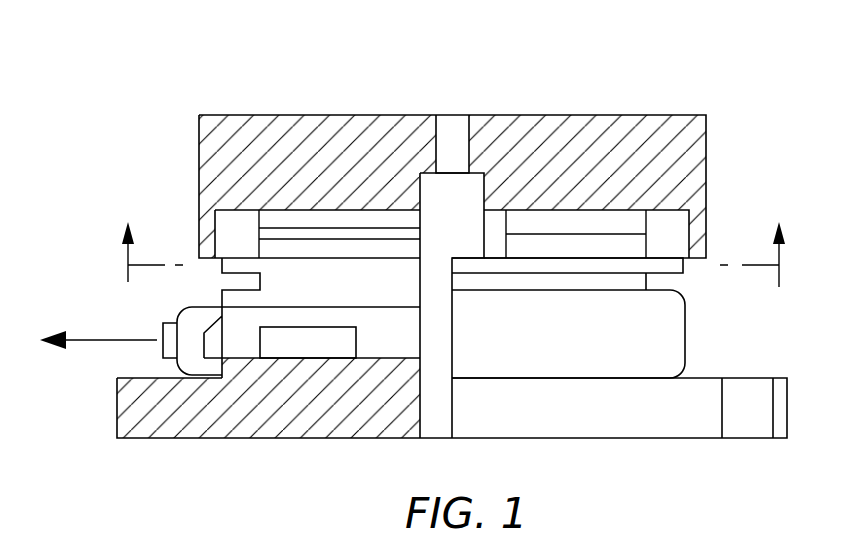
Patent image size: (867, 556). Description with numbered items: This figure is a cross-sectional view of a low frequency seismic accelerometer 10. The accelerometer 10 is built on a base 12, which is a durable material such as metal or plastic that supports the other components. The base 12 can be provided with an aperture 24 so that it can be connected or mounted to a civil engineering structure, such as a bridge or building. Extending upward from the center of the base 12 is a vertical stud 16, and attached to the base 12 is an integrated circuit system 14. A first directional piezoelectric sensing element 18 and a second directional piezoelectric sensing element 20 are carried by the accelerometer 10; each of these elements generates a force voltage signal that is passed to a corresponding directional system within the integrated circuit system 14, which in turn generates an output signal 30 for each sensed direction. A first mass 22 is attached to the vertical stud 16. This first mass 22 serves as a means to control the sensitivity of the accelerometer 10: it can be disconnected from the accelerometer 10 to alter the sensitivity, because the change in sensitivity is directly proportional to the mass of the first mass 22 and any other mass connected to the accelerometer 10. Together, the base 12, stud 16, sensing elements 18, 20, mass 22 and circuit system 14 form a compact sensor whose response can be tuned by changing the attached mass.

The seismic accelerometer 10 is at (426, 251).
The base 12 is at (549, 438).
The integrated circuit system 14 is at (298, 345).
The vertical stud 16 is at (459, 185).
The first directional piezoelectric sensing element 18 is at (303, 220).
The second directional piezoelectric sensing element 20 is at (602, 225).
The first mass 22 is at (586, 113).
The aperture 24 is at (742, 388).
The output signal 30 is at (83, 338).